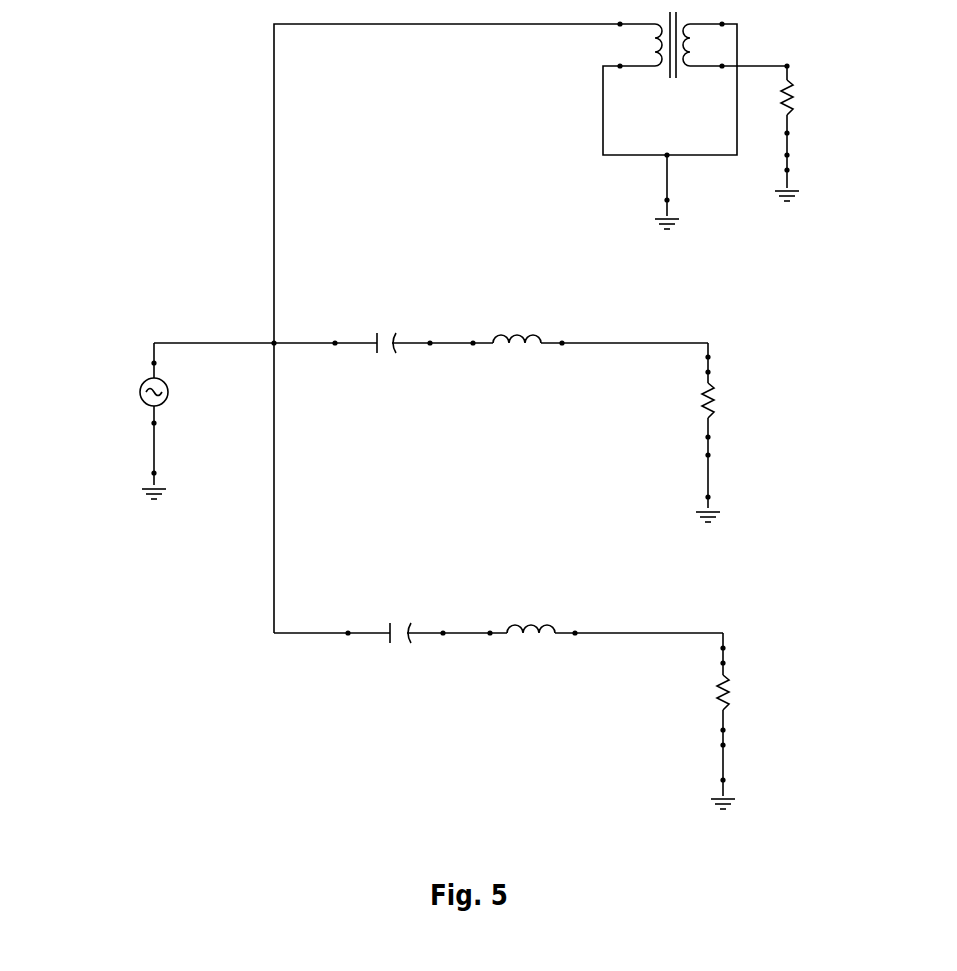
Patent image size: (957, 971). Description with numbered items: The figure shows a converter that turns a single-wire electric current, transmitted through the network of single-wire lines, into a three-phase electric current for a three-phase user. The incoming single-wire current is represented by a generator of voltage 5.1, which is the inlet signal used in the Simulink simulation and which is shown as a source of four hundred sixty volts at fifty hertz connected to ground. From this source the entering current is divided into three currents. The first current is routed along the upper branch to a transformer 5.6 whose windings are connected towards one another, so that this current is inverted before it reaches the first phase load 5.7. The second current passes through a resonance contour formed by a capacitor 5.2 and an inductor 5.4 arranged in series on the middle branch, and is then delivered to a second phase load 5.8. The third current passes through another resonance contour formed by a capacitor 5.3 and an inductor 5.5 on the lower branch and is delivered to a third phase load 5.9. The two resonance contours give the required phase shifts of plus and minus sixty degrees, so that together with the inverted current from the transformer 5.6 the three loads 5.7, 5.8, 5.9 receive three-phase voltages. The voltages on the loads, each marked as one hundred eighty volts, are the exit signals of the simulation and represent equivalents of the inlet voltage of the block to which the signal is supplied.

The AC voltage source 460 V 50 Hz 5.1 is at (130, 397).
The resonance contour 5.2 is at (385, 367).
The resonance contour 5.3 is at (385, 652).
The resonance contour 5.4 is at (518, 362).
The resonance contour 5.5 is at (538, 652).
The transformer 5.6 is at (590, 43).
The phase load 5.7 is at (803, 103).
The phase load 5.8 is at (722, 412).
The phase load 5.9 is at (735, 705).